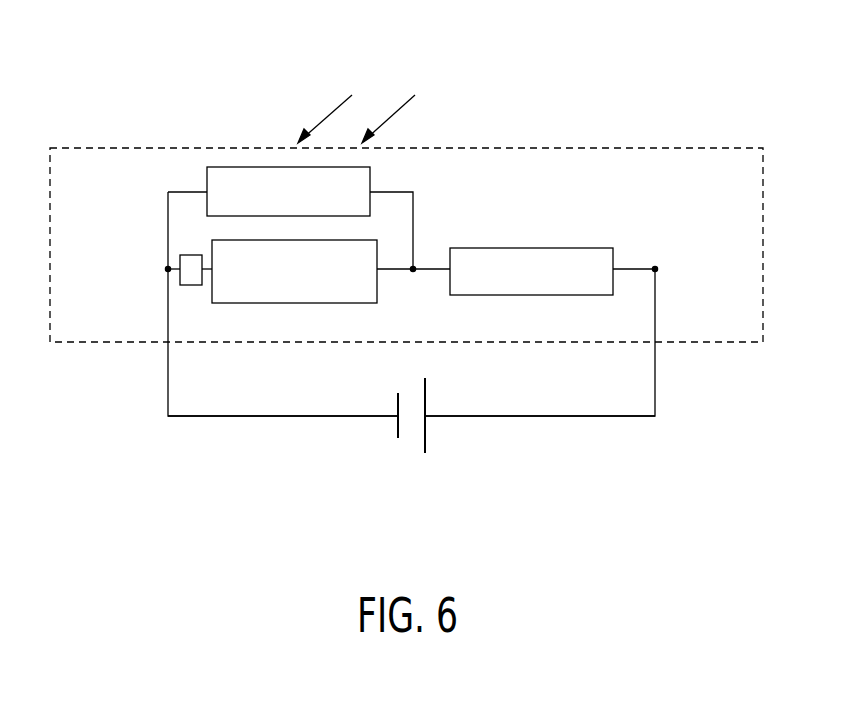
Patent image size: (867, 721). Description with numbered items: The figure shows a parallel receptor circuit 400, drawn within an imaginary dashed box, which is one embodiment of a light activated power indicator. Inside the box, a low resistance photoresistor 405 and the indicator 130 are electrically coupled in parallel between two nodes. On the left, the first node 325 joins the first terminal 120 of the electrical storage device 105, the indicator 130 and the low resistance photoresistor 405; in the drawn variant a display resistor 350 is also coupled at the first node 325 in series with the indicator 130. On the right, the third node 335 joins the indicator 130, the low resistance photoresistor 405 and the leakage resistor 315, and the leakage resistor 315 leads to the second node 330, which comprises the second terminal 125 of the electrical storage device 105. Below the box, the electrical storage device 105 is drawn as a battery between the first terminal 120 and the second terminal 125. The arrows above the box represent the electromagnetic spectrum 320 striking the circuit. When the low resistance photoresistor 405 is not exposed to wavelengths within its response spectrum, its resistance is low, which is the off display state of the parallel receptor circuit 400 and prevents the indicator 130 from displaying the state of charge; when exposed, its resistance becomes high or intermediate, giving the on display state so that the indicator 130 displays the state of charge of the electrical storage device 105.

The electrical storage device 105 is at (430, 477).
The first terminal 120 is at (325, 416).
The second terminal 125 is at (527, 416).
The indicator 130 is at (290, 303).
The leakage resistor 315 is at (527, 248).
The electromagnetic spectrum 320 is at (387, 88).
The first node 325 is at (166, 268).
The second node 330 is at (658, 268).
The third node 335 is at (412, 273).
The display resistor 350 is at (179, 280).
The parallel receptor circuit 400 is at (128, 148).
The low resistance photoresistor 405 is at (240, 167).